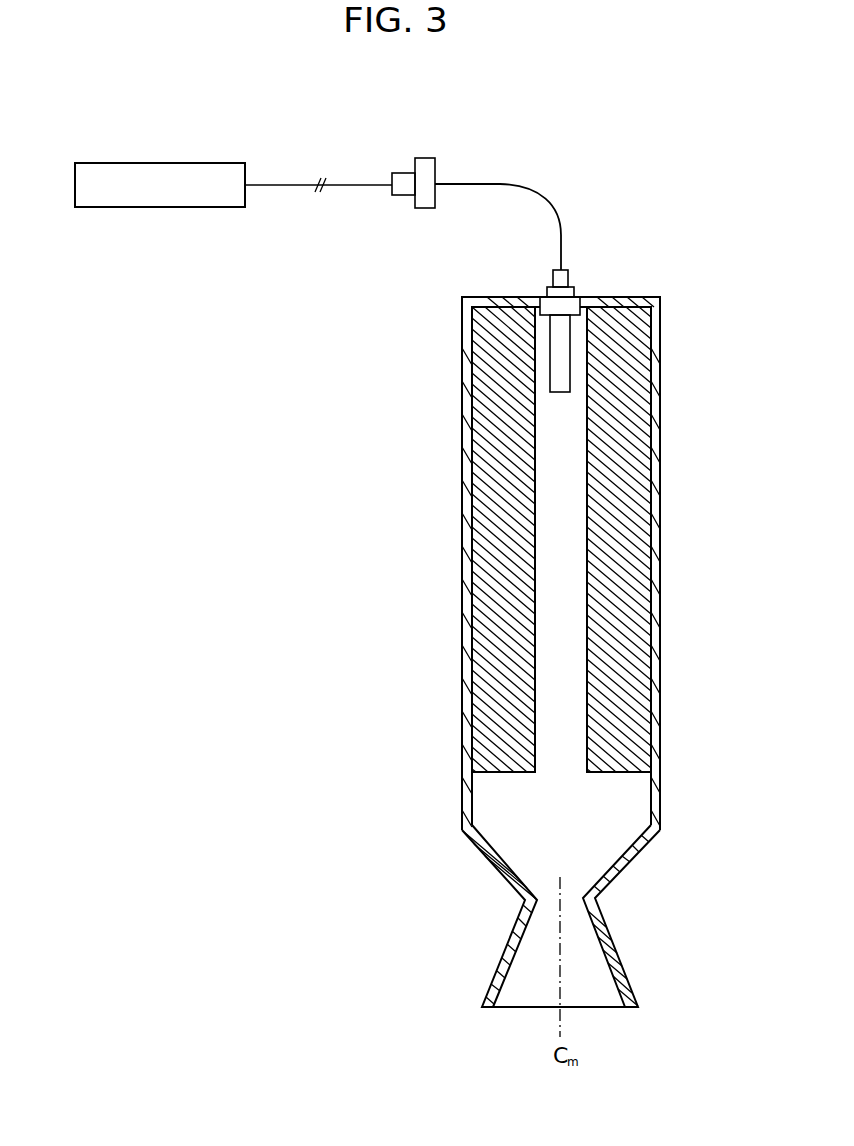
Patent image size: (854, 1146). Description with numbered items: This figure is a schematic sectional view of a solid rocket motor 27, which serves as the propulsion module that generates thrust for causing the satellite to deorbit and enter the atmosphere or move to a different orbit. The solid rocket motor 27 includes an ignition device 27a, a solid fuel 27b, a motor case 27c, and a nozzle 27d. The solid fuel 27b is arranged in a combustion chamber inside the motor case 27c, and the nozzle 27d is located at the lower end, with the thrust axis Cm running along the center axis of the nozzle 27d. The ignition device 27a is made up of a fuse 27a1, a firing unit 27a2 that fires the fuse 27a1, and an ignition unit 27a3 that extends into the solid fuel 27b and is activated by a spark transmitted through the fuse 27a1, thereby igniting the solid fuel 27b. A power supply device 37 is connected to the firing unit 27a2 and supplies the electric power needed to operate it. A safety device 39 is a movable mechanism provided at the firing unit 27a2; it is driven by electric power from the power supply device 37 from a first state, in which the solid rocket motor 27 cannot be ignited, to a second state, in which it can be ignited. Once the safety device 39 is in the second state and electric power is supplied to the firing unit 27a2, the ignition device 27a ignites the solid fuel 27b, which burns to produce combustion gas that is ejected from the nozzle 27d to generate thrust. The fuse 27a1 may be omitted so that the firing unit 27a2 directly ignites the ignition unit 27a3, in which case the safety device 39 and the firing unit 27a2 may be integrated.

The solid rocket motor 27 is at (578, 565).
The ignition device 27a is at (548, 258).
The fuse 27a1 is at (560, 226).
The firing unit 27a2 is at (397, 173).
The ignition unit 27a3 is at (570, 353).
The solid fuel 27b is at (640, 540).
The motor case 27c is at (657, 605).
The nozzle 27d is at (618, 957).
The power supply device 37 is at (98, 163).
The safety device 39 is at (426, 208).